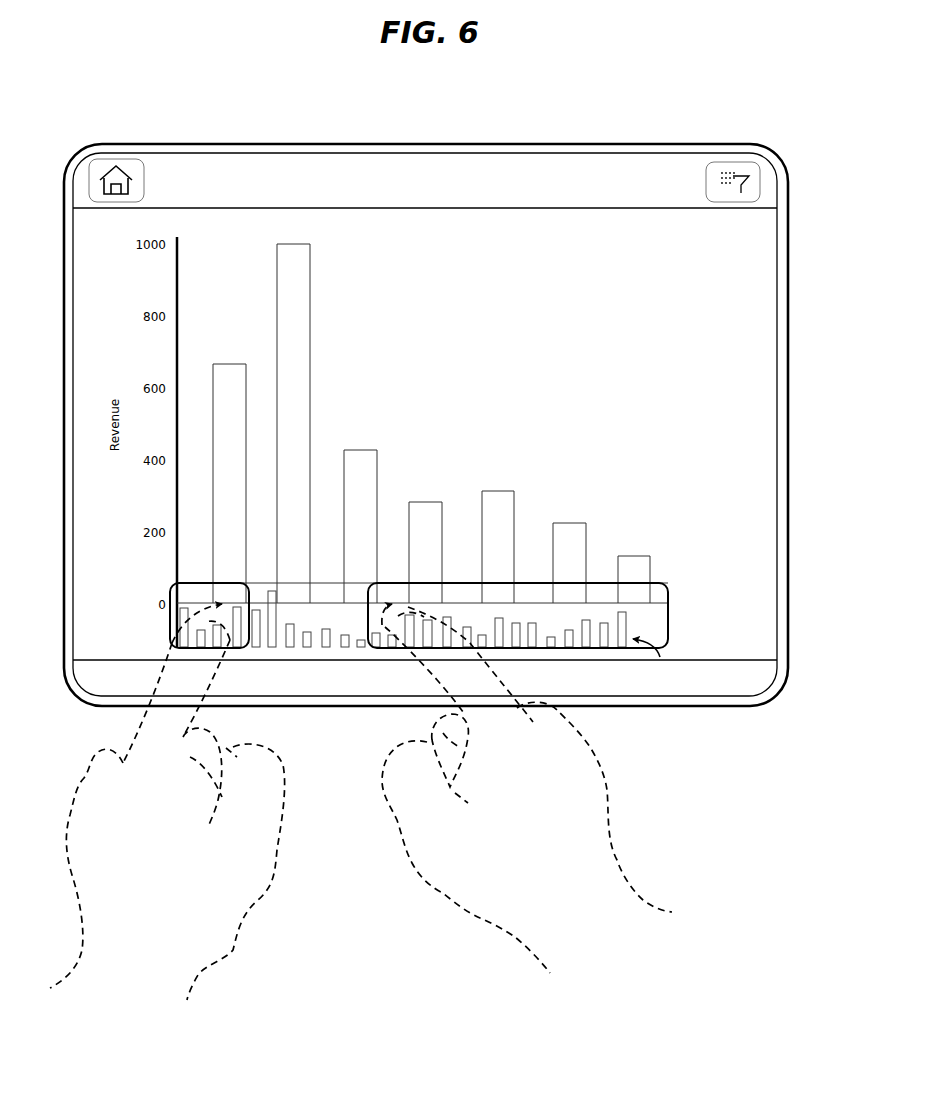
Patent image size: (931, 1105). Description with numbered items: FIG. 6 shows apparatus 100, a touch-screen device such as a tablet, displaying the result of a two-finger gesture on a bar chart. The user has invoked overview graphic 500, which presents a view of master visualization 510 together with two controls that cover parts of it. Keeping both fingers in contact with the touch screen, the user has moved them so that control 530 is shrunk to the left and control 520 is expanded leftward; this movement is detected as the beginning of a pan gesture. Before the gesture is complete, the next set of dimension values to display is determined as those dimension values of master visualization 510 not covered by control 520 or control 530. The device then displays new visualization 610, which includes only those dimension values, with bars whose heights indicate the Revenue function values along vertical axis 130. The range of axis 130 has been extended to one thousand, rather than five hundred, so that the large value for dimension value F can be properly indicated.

The apparatus 100 is at (222, 110).
The vertical axis 130 is at (177, 273).
The new visualization 610 is at (453, 366).
The control 530 is at (185, 583).
The control 520 is at (655, 592).
The overview graphic 500 is at (668, 632).
The master visualization 510 is at (657, 657).